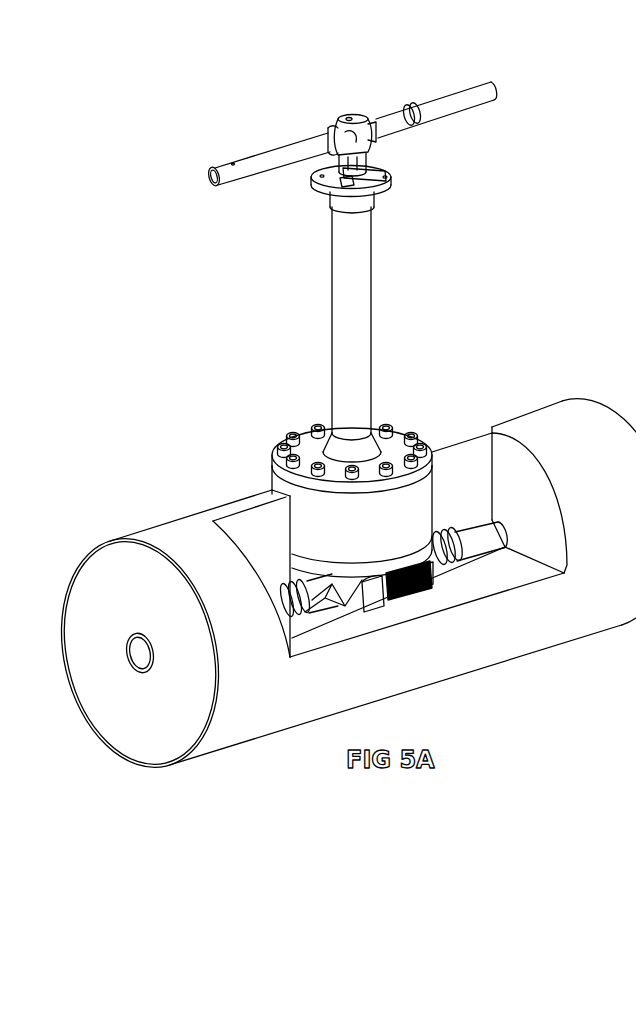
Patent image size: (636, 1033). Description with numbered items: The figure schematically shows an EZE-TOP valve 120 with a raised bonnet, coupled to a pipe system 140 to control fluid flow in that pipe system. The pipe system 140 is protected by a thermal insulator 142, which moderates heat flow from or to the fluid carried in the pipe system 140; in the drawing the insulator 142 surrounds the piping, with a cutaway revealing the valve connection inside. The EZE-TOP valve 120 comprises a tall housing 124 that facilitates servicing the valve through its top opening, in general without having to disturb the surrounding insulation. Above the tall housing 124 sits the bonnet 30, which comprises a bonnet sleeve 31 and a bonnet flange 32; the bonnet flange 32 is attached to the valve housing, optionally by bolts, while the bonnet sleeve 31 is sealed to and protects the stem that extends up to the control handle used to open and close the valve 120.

The EZE-TOP valve 120 is at (404, 350).
The bonnet 30 is at (338, 287).
The bonnet sleeve 31 is at (342, 380).
The bonnet flange 32 is at (310, 447).
The tall housing 124 is at (381, 532).
The thermal insulator 142 is at (603, 510).
The pipe system 140 is at (467, 582).